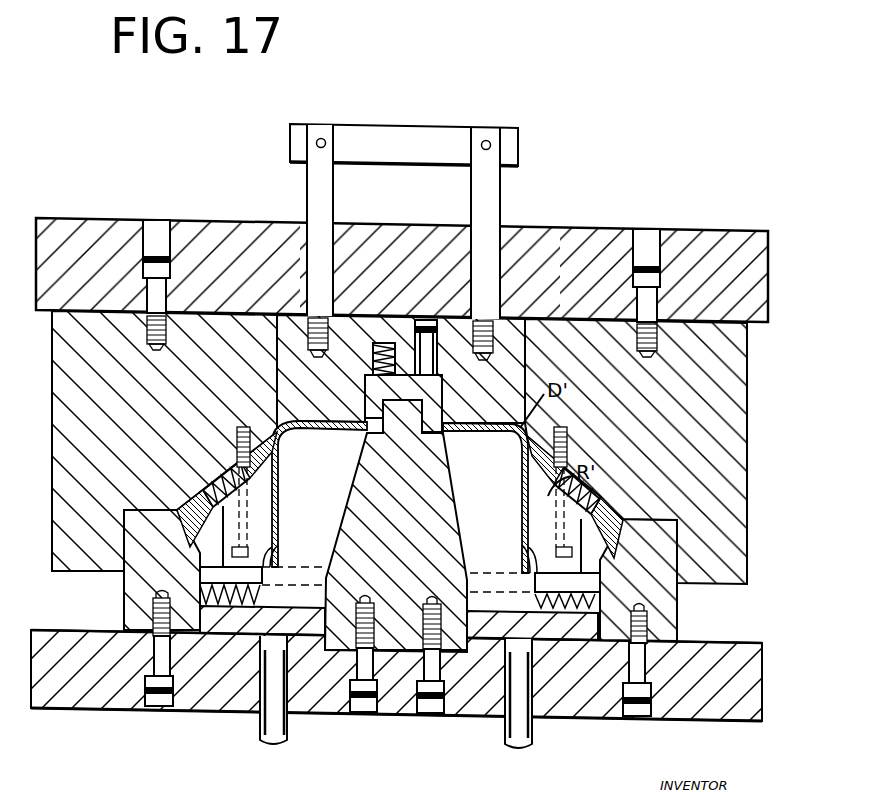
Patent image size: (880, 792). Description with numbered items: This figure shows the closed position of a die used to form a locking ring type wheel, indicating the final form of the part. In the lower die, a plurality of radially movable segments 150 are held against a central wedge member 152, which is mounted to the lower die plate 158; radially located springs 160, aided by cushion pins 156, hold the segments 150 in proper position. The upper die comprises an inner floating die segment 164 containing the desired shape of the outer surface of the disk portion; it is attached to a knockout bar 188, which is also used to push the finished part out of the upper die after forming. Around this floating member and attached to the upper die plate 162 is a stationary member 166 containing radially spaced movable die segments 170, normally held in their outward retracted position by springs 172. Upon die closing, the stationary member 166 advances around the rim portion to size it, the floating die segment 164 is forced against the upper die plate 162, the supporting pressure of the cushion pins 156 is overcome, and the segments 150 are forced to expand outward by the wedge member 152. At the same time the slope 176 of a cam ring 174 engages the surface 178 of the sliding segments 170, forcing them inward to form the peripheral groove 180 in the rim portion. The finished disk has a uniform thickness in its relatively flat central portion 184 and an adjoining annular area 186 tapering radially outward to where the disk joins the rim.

The radially movable segments 150 is at (401, 525).
The central wedge member 152 is at (343, 640).
The cushion pins 156 is at (531, 736).
The lower die plate 158 is at (73, 695).
The radially located springs 160 is at (215, 597).
The upper die plate 162 is at (193, 233).
The inner floating die segment 164 is at (510, 330).
The stationary member 166 is at (82, 376).
The movable die segments 170 is at (275, 430).
The springs 172 is at (227, 486).
The cam ring 174 is at (130, 578).
The slope 176 is at (553, 498).
The surface 178 is at (543, 445).
The peripheral groove 180 is at (519, 451).
The relatively flat central portion 184 is at (461, 389).
The adjoining annular area 186 is at (307, 416).
The knockout bar 188 is at (363, 132).